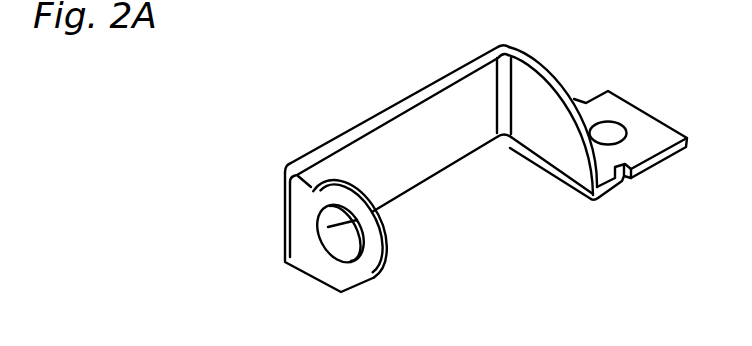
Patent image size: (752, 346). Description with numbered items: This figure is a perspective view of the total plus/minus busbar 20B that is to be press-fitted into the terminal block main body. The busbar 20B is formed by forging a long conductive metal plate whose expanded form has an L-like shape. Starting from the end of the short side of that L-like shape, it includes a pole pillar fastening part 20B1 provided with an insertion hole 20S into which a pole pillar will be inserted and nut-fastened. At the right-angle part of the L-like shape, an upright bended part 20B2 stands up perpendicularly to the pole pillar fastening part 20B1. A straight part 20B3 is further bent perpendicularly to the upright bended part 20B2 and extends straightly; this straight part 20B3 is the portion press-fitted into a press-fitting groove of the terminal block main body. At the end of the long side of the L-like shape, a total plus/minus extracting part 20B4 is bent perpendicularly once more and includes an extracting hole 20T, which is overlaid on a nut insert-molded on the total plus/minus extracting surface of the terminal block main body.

The total plus/minus busbar 20B is at (340, 76).
The pole pillar fastening part 20B1 is at (645, 124).
The upright bended part 20B2 is at (538, 105).
The straight part 20B3 is at (412, 122).
The total plus/minus extracting part 20B4 is at (315, 243).
The insertion hole 20S is at (599, 138).
The extracting hole 20T is at (330, 243).